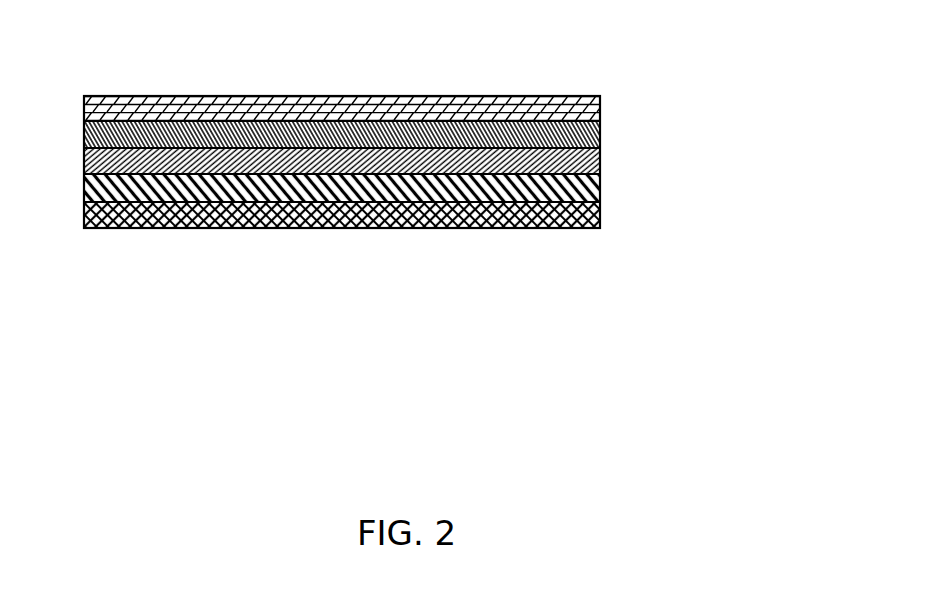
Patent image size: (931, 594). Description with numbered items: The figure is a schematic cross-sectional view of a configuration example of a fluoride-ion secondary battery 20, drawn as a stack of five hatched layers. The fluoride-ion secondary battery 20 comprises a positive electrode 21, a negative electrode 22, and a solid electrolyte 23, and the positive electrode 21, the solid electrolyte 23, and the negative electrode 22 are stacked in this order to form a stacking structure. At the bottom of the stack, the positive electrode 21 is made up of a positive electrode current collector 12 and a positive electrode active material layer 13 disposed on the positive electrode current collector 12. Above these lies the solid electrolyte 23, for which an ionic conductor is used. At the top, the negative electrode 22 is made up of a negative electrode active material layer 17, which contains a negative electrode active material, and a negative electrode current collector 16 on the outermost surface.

The fluoride-ion secondary battery 20 is at (436, 140).
The negative electrode 22 is at (435, 108).
The positive electrode 21 is at (435, 219).
The negative electrode current collector 16 is at (633, 95).
The negative electrode active material layer 17 is at (600, 135).
The solid electrolyte 23 is at (737, 158).
The positive electrode active material layer 13 is at (633, 201).
The positive electrode current collector 12 is at (388, 228).